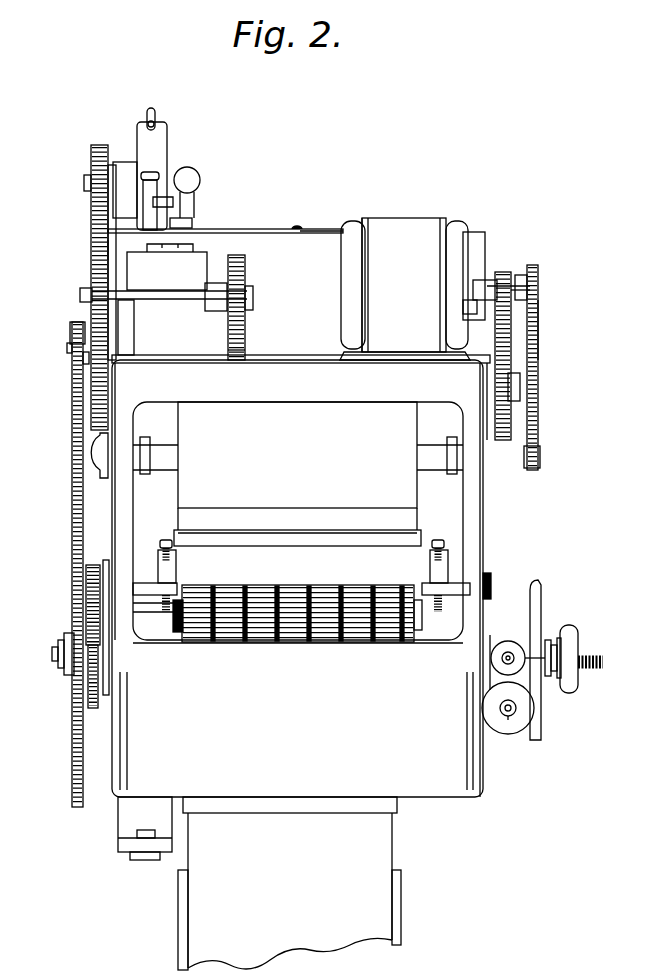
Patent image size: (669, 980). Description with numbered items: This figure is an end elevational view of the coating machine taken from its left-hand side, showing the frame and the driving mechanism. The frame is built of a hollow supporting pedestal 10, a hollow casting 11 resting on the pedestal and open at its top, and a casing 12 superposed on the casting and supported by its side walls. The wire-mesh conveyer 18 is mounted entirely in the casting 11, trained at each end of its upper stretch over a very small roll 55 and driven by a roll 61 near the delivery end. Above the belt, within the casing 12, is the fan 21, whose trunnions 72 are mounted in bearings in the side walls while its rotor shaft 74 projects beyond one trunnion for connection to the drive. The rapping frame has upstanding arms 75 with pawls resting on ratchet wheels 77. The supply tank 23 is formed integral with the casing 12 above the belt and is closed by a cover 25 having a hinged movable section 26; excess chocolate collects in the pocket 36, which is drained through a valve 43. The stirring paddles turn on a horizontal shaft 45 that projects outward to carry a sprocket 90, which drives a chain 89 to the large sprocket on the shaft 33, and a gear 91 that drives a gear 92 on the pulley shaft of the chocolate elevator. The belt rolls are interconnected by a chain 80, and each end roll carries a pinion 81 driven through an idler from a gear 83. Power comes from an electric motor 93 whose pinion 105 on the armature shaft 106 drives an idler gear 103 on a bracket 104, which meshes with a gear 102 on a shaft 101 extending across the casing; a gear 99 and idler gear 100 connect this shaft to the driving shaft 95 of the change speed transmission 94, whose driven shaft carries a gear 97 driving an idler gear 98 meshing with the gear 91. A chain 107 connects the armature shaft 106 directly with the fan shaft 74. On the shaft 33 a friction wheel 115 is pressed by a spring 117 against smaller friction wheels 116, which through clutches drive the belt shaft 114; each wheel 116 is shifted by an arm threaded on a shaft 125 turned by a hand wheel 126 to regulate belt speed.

The hollow supporting pedestal 10 is at (289, 883).
The hollow casting 11 is at (296, 731).
The casing 12 is at (301, 576).
The pervious conveyer 18 is at (258, 645).
The fan 21 is at (297, 474).
The supply tank 23 is at (266, 244).
The cover 25 is at (232, 229).
The movable section 26 is at (325, 232).
The shaft 33 is at (52, 654).
The pocket 36 is at (135, 822).
The valve 43 is at (130, 856).
The horizontal shaft 45 is at (68, 347).
The rolls 55 is at (178, 585).
The roll 61 is at (168, 630).
The trunnions 72 is at (163, 458).
The shaft 74 is at (540, 456).
The upstanding arms 75 is at (176, 560).
The ratchet wheels 77 is at (150, 575).
The chain 80 is at (88, 690).
The pinion 81 is at (86, 592).
The gear 83 is at (72, 568).
The chain 89 is at (70, 526).
The sprocket 90 is at (70, 330).
The gear 91 is at (92, 236).
The gear 92 is at (90, 158).
The electric motor 93 is at (412, 289).
The change speed transmission 94 is at (162, 299).
The driving shaft 95 is at (254, 298).
The gear 97 is at (82, 288).
The idler gear 98 is at (83, 358).
The gear 99 is at (246, 268).
The idler gear 100 is at (246, 346).
The shaft 101 is at (538, 392).
The gear 102 is at (512, 360).
The idler gear 103 is at (530, 282).
The bracket 104 is at (476, 298).
The pinion 105 is at (527, 287).
The armature shaft 106 is at (495, 290).
The chain 107 is at (538, 328).
The shaft 114 is at (512, 655).
The friction wheel 115 is at (541, 592).
The friction wheels 116 is at (491, 658).
The spring 117 is at (575, 628).
The shaft 125 is at (516, 708).
The hand wheel 126 is at (509, 720).